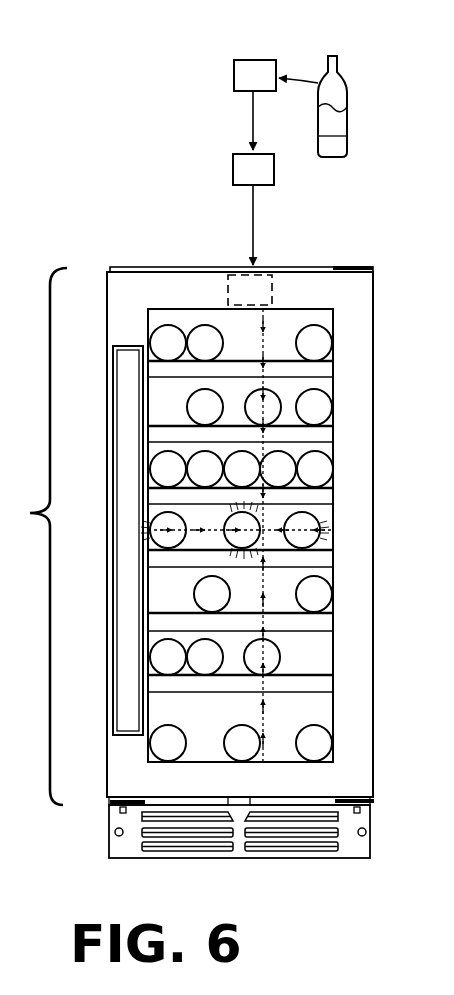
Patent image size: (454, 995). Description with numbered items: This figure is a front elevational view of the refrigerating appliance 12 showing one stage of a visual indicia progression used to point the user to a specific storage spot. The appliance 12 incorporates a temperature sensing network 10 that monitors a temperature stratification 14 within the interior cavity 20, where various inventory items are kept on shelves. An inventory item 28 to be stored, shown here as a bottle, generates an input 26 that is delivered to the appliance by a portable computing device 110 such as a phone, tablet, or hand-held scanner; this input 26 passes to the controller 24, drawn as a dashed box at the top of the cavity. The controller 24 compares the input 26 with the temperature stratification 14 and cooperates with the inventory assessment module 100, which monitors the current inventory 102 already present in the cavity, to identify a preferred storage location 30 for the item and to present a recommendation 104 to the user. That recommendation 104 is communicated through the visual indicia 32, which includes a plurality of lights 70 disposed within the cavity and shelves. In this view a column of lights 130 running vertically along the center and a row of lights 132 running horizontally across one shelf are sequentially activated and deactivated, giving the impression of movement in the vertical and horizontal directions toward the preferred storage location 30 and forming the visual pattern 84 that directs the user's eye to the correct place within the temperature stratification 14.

The temperature sensing network 10 is at (208, 263).
The appliance 12 is at (132, 265).
The temperature stratification 14 is at (227, 536).
The interior cavity 20 is at (303, 652).
The controller 24 is at (272, 292).
The input 26 is at (233, 165).
The inventory item 28 is at (337, 92).
The preferred storage location 30 is at (272, 522).
The visual indicia 32 is at (293, 265).
The lights 70 is at (273, 497).
The visual pattern 84 is at (170, 318).
The inventory assessment module 100 is at (167, 263).
The current inventory 102 is at (323, 342).
The recommendation 104 is at (318, 498).
The portable computing device 110 is at (234, 72).
The column of lights 130 is at (265, 323).
The row of lights 132 is at (200, 532).